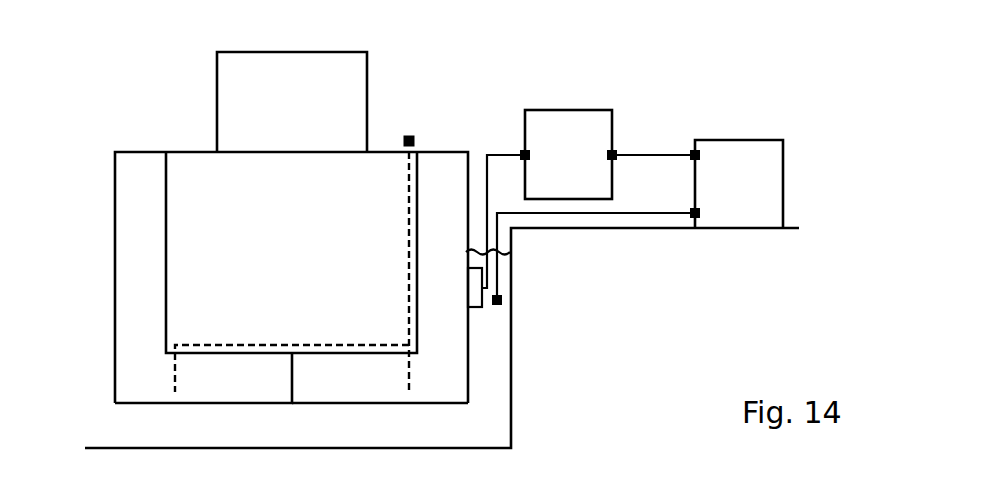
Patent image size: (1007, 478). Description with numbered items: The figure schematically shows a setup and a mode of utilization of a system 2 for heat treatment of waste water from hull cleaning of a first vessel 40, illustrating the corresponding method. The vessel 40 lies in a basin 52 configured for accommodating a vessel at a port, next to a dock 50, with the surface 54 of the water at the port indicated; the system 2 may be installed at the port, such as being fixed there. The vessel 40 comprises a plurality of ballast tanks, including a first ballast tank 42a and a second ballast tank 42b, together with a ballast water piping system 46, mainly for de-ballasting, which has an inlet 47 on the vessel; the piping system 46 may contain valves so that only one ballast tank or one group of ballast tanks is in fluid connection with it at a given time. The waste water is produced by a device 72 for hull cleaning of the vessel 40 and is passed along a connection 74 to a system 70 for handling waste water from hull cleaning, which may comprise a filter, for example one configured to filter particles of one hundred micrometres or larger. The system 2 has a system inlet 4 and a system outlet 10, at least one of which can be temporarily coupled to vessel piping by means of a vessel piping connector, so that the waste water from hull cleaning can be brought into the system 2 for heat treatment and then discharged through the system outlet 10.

The system for heat treatment of ballast water and/or waste water from hull cleaning 2 is at (746, 196).
The system inlet 4 is at (617, 150).
The system outlet 10 is at (502, 305).
The vessel 40 is at (109, 68).
The first ballast tank 42a is at (459, 393).
The second ballast tank 42b is at (165, 393).
The ballast water piping system 46 is at (408, 229).
The inlet on the vessel for ballast water piping system 47 is at (408, 134).
The dock 50 is at (543, 229).
The basin 52 is at (513, 287).
The surface of the water 54 is at (507, 255).
The system for handling waste water from hull cleaning 70 is at (582, 168).
The device for hull cleaning 72 is at (482, 308).
The signal line 74 is at (507, 153).